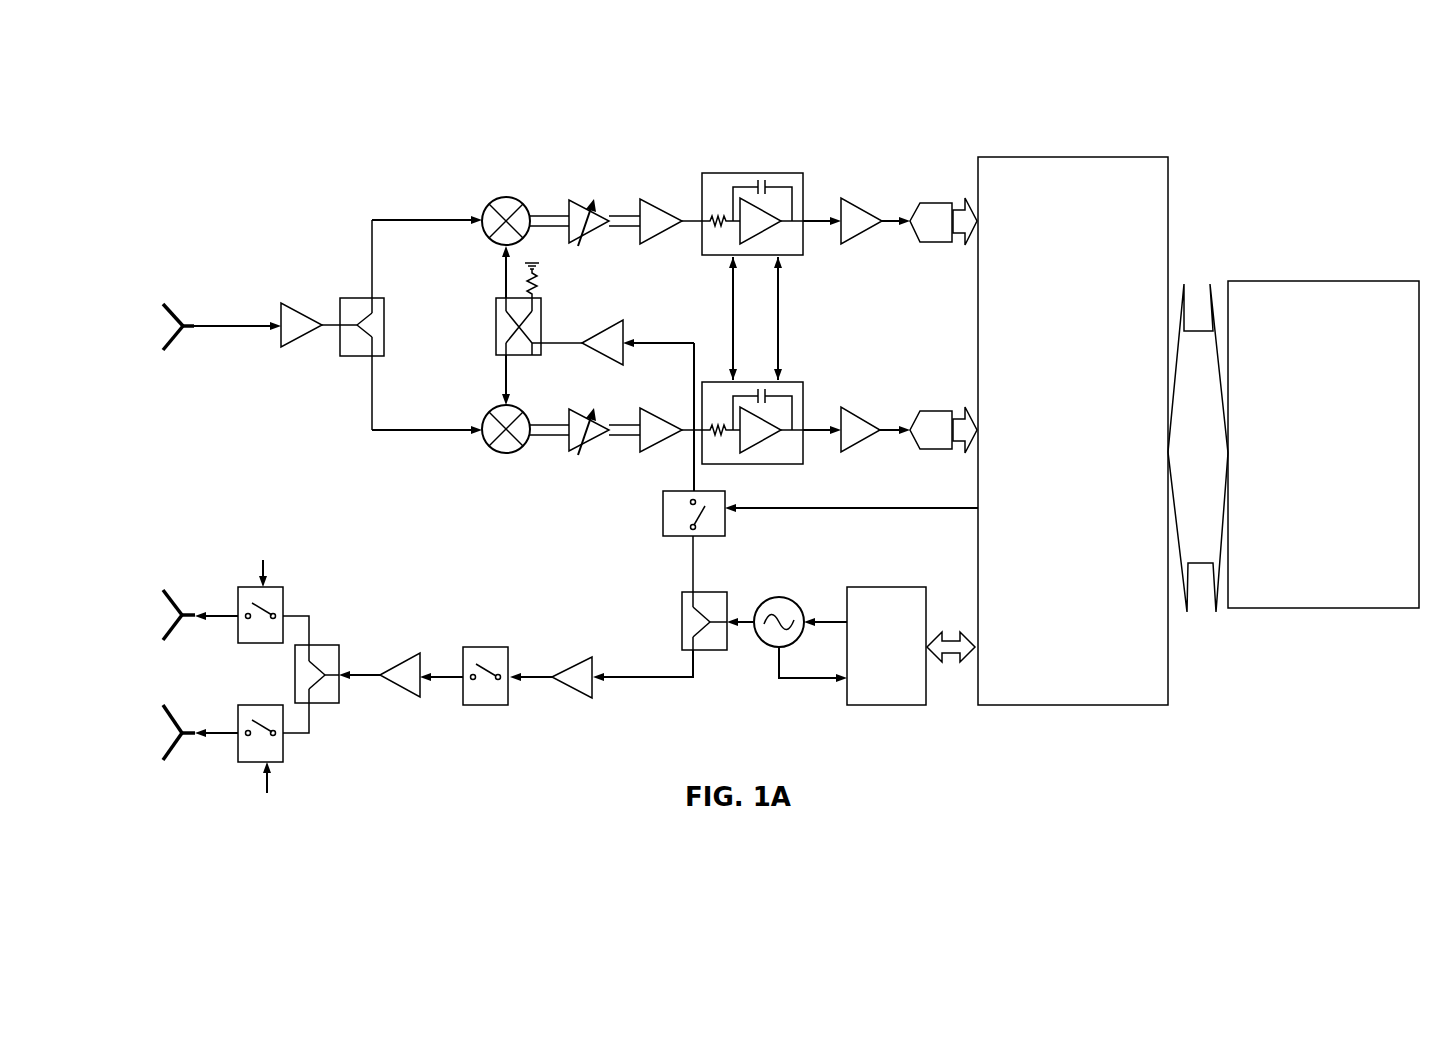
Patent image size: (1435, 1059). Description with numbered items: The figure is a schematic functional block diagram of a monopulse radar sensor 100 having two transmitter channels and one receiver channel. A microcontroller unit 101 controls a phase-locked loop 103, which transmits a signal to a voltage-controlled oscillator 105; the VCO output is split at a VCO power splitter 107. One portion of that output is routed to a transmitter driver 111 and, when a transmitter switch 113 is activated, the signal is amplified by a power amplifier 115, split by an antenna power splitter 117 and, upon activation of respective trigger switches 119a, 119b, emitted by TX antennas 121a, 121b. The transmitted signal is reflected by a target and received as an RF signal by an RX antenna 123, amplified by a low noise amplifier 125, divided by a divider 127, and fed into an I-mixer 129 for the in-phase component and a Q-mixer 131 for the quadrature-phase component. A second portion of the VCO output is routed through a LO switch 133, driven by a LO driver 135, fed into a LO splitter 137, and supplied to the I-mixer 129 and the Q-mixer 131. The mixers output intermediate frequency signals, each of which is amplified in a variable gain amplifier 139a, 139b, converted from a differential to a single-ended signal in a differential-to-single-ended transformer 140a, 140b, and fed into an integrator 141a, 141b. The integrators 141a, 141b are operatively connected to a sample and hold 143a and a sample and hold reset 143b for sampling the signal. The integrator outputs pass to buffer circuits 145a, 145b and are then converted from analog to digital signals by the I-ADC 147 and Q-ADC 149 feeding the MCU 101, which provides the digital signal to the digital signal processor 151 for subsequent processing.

The monopulse radar sensor 100 is at (245, 126).
The microcontroller unit 101 is at (1088, 526).
The phase-locked loop 103 is at (882, 590).
The voltage-controlled oscillator 105 is at (760, 642).
The VCO power splitter 107 is at (682, 622).
The transmitter driver 111 is at (563, 682).
The transmitter switch 113 is at (488, 646).
The power amplifier 115 is at (397, 692).
The antenna power splitter 117 is at (345, 657).
The trigger switch 119a is at (255, 587).
The trigger switch 119b is at (254, 760).
The TX antenna 121a is at (175, 602).
The TX antenna 121b is at (175, 760).
The RX antenna 123 is at (178, 310).
The low noise amplifier 125 is at (290, 345).
The divider 127 is at (350, 358).
The I-mixer 129 is at (515, 197).
The Q-mixer 131 is at (487, 445).
The LO switch 133 is at (663, 535).
The LO driver 135 is at (604, 331).
The LO splitter 137 is at (497, 312).
The variable gain amplifier 139a is at (584, 203).
The variable gain amplifier 139b is at (576, 454).
The differential-to-single-ended transformer 140a is at (661, 207).
The differential-to-single-ended transformer 140b is at (647, 457).
The integrator 141a is at (783, 174).
The integrator 141b is at (807, 388).
The sample and hold 143a is at (778, 318).
The sample and hold reset 143b is at (733, 315).
The buffer circuit 145a is at (862, 205).
The buffer circuit 145b is at (856, 438).
The I-ADC 147 is at (938, 207).
The Q-ADC 149 is at (939, 400).
The digital signal processor 151 is at (1340, 504).